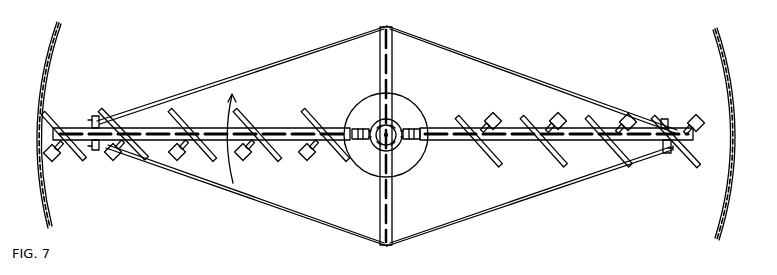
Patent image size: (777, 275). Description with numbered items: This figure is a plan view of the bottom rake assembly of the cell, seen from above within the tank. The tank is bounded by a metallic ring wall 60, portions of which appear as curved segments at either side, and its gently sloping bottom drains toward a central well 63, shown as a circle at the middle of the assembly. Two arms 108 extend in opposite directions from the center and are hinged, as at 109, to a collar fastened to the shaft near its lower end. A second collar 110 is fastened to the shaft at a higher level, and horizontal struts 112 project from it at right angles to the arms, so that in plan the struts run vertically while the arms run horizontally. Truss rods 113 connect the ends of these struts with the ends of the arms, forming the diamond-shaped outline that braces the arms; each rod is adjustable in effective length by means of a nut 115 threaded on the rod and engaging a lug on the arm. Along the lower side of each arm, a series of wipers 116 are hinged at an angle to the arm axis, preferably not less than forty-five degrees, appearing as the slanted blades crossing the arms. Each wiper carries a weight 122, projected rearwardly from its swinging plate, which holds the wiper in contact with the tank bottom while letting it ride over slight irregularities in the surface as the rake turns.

The metallic ring wall 60 is at (52, 186).
The central well 63 is at (420, 157).
The arms 108 is at (285, 128).
The hinge 109 is at (353, 128).
The second collar 110 is at (396, 126).
The horizontal struts 112 is at (393, 71).
The truss rods 113 is at (234, 193).
The nut 115 is at (107, 98).
The wipers 116 is at (181, 118).
The weight 122 is at (181, 160).